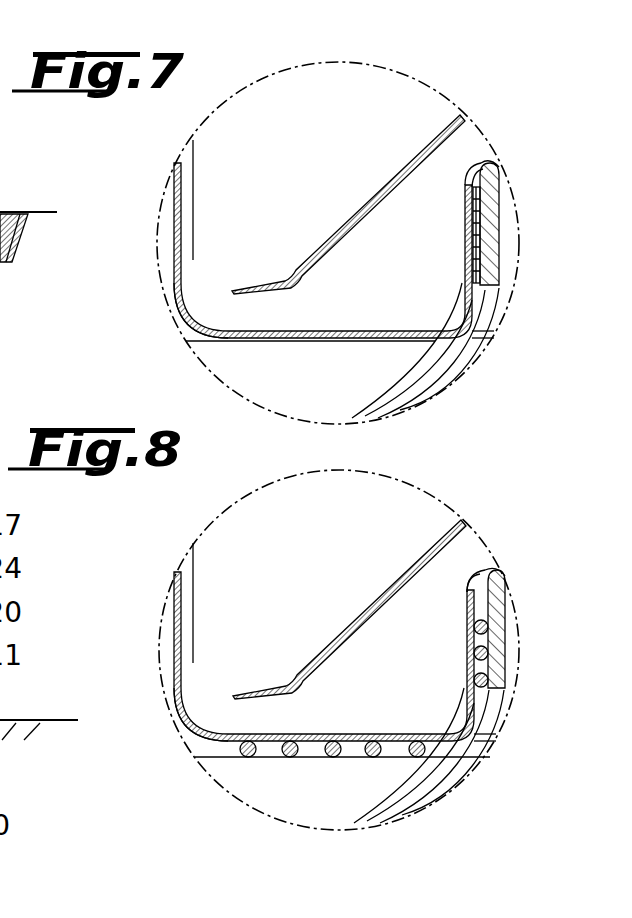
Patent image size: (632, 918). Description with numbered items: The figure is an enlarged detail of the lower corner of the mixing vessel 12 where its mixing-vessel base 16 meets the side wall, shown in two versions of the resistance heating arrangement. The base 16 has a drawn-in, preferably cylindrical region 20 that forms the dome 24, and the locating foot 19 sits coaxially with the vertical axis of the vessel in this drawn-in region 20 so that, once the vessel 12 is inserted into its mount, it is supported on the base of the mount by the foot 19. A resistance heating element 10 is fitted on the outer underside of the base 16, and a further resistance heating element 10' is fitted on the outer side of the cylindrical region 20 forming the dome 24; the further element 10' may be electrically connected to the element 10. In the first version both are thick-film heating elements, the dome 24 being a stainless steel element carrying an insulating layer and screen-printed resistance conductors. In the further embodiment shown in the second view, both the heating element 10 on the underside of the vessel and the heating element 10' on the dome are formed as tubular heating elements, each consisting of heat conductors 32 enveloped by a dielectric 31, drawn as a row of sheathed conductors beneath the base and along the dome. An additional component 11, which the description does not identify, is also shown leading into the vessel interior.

In FIG. 7, the resistance heating element 10 is at (310, 409).
In FIG. 8, the resistance heating element 10 is at (342, 817).
In FIG. 7, the further resistance heating element 10' is at (539, 224).
In FIG. 8, the further resistance heating element 10' is at (546, 629).
In FIG. 7, the blade 11 is at (399, 174).
In FIG. 8, the blade 11 is at (400, 579).
In FIG. 7, the mixing vessel 12 is at (174, 258).
In FIG. 8, the mixing vessel 12 is at (174, 664).
In FIG. 7, the mixing-vessel base 16 is at (196, 322).
In FIG. 8, the mixing-vessel base 16 is at (198, 728).
In FIG. 7, the locating foot 19 is at (420, 385).
In FIG. 8, the locating foot 19 is at (432, 790).
In FIG. 7, the cylindrical region 20 is at (471, 236).
In FIG. 8, the cylindrical region 20 is at (472, 642).
In FIG. 7, the dome 24 is at (489, 161).
In FIG. 8, the dome 24 is at (492, 567).
In FIG. 8, the dielectric 31 is at (240, 748).
In FIG. 8, the heat conductors 32 is at (248, 754).